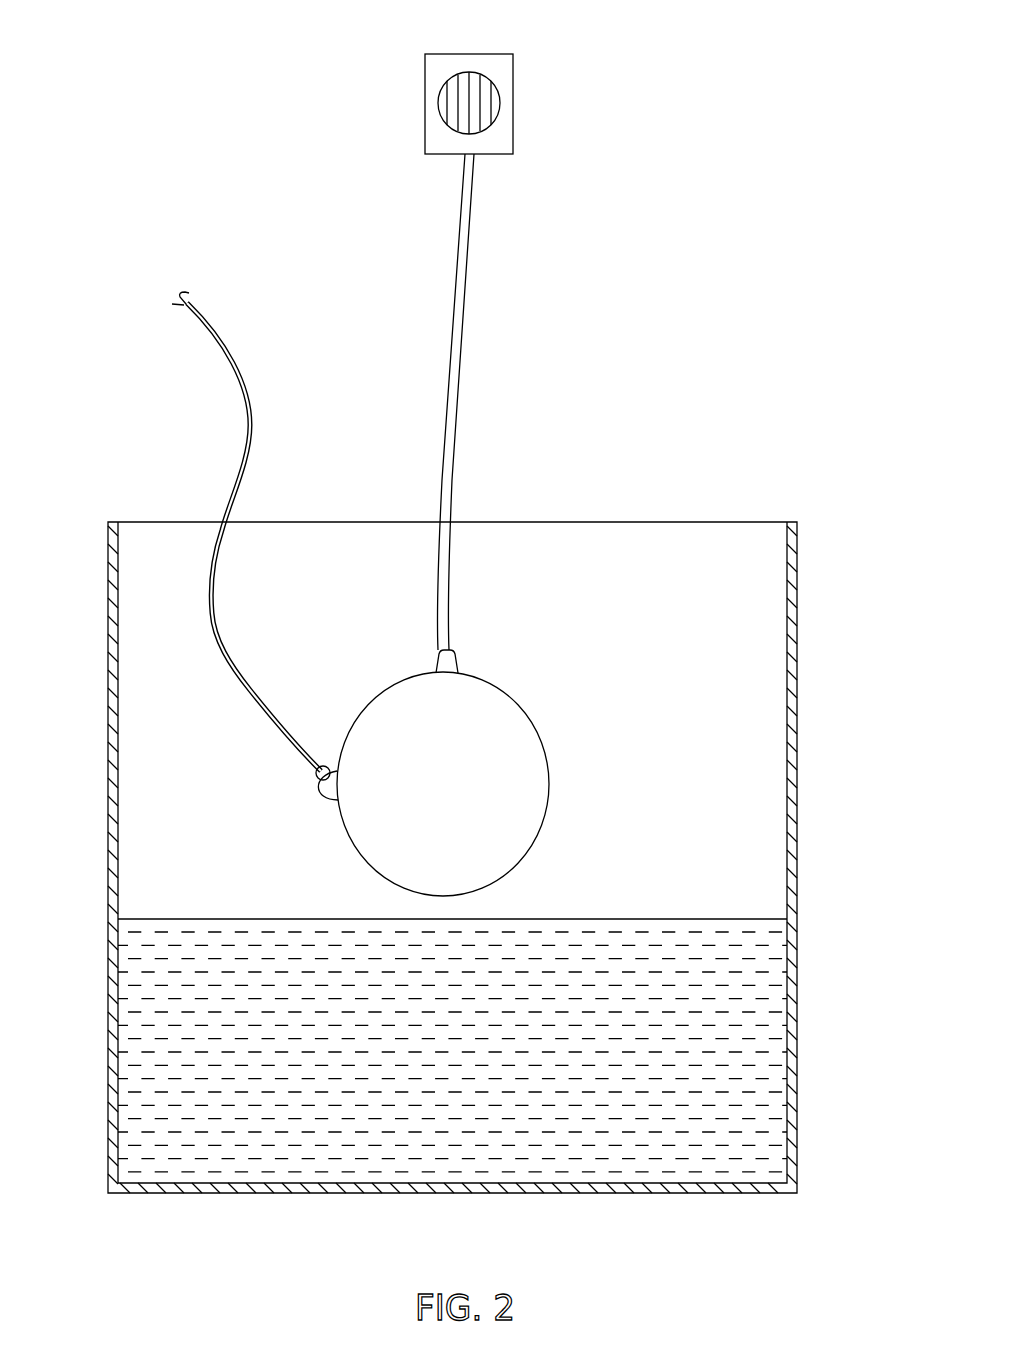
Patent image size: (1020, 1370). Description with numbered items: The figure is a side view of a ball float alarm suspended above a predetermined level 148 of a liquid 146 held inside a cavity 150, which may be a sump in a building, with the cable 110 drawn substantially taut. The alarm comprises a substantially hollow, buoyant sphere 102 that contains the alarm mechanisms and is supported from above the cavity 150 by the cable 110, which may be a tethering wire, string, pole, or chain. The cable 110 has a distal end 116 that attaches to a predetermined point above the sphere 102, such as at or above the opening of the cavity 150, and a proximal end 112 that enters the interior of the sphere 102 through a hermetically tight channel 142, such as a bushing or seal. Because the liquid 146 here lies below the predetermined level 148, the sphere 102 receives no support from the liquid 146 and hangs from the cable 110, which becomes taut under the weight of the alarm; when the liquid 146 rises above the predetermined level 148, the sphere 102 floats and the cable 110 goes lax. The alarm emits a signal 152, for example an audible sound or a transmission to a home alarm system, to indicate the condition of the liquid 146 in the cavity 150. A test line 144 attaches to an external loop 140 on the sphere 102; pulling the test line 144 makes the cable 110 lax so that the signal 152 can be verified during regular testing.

The sphere 102 is at (532, 717).
The cable 110 is at (467, 318).
The proximal end 112 is at (447, 627).
The distal end 116 is at (474, 172).
The external loop 140 is at (333, 801).
The hermetically tight channel 142 is at (457, 660).
The test line 144 is at (243, 455).
The liquid 146 is at (143, 1008).
The predetermined level 148 is at (763, 910).
The cavity 150 is at (108, 578).
The signal 152 is at (513, 90).